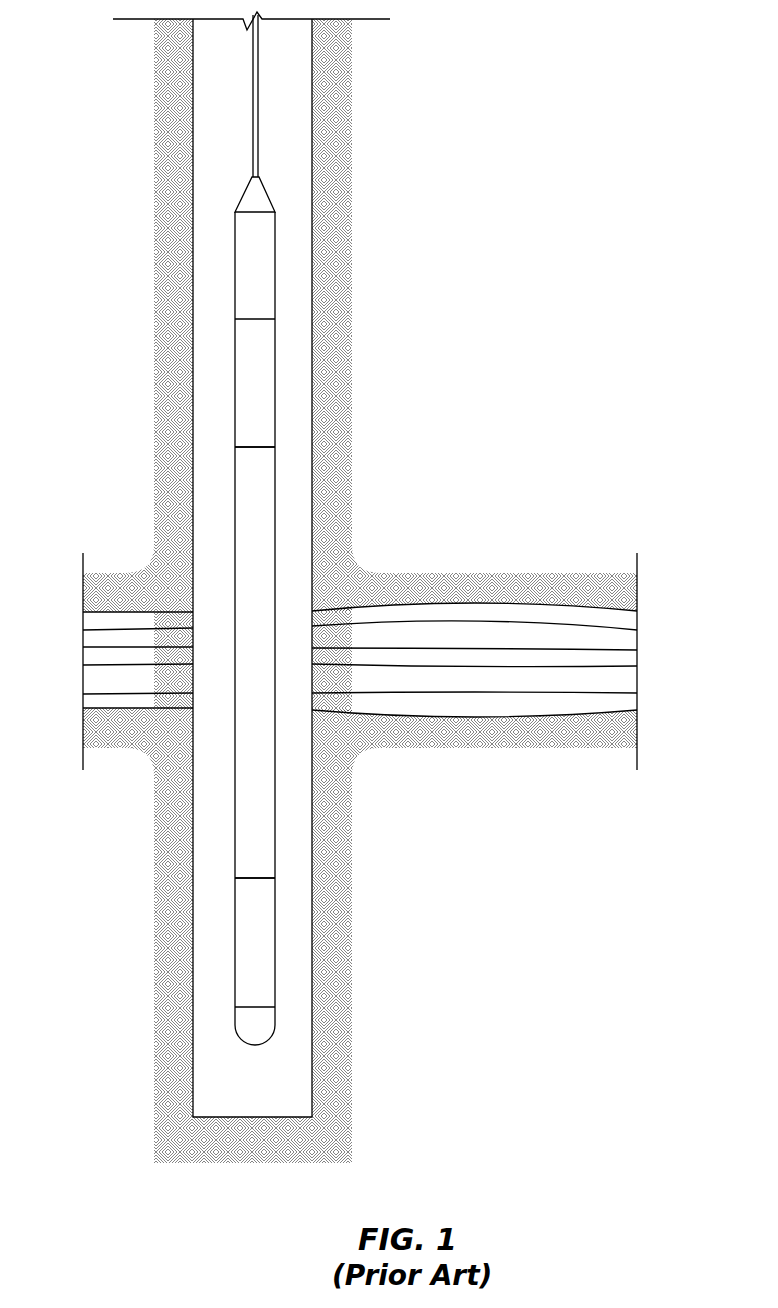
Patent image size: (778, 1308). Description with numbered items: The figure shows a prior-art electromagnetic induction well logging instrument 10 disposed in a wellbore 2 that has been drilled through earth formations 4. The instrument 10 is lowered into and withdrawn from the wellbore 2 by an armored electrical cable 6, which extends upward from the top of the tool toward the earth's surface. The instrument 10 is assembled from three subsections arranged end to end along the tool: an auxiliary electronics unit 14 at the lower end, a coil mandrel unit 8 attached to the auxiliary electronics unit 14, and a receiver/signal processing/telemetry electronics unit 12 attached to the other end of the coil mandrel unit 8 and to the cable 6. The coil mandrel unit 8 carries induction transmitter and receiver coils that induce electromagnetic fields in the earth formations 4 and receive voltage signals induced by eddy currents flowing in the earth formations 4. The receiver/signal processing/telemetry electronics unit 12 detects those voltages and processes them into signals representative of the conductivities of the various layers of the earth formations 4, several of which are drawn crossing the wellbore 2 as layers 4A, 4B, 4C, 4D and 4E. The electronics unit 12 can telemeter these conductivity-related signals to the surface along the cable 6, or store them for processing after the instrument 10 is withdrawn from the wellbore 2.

The wellbore 2 is at (290, 108).
The earth formations 4 is at (105, 657).
The layer of the earth formations 4A is at (616, 621).
The layer of the earth formations 4B is at (616, 642).
The layer of the earth formations 4C is at (616, 662).
The layer of the earth formations 4D is at (616, 680).
The layer of the earth formations 4E is at (616, 700).
The armored electrical cable 6 is at (252, 91).
The coil mandrel unit 8 is at (253, 663).
The electromagnetic induction well logging instrument 10 is at (302, 530).
The receiver/signal processing/telemetry electronics unit 12 is at (252, 360).
The auxiliary electronics unit 14 is at (252, 956).